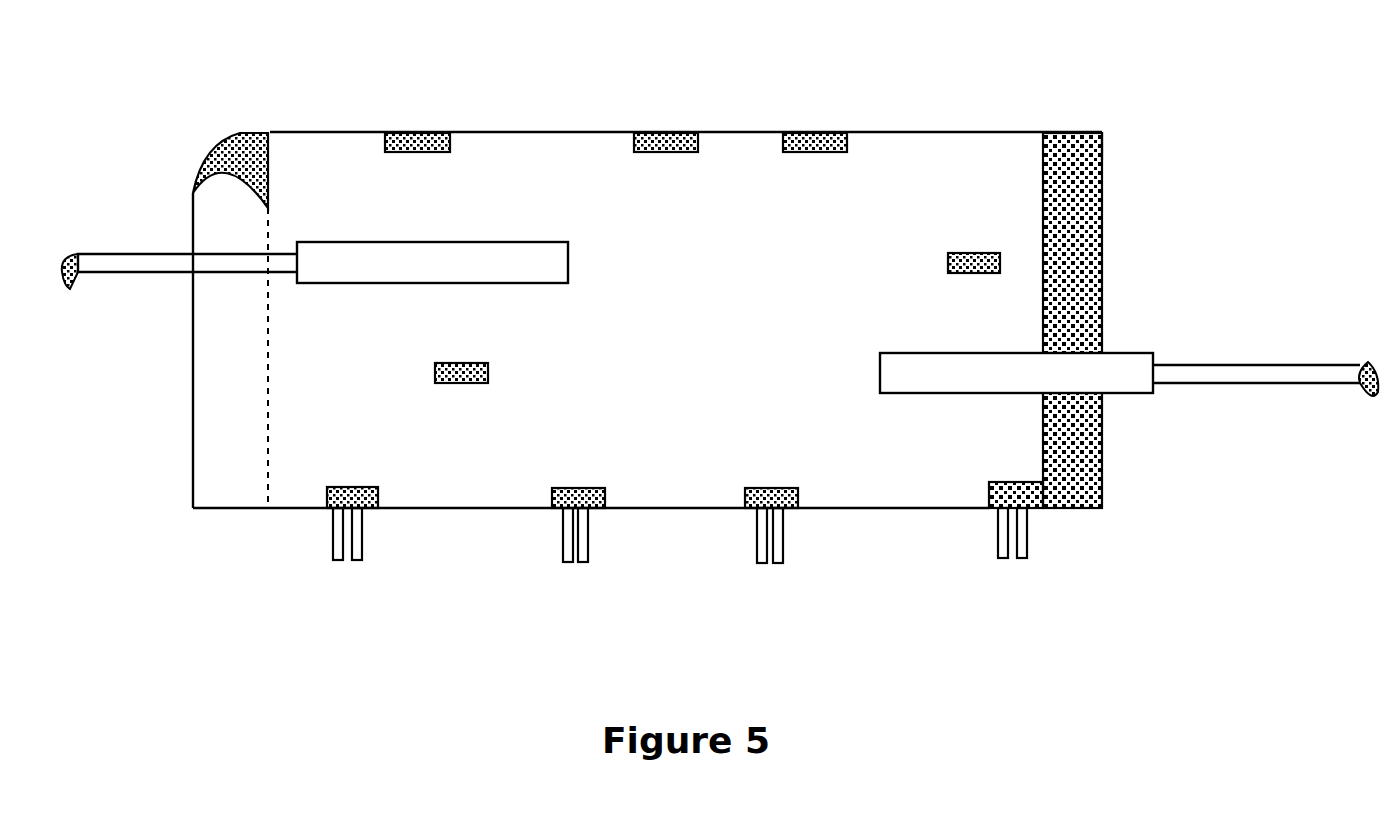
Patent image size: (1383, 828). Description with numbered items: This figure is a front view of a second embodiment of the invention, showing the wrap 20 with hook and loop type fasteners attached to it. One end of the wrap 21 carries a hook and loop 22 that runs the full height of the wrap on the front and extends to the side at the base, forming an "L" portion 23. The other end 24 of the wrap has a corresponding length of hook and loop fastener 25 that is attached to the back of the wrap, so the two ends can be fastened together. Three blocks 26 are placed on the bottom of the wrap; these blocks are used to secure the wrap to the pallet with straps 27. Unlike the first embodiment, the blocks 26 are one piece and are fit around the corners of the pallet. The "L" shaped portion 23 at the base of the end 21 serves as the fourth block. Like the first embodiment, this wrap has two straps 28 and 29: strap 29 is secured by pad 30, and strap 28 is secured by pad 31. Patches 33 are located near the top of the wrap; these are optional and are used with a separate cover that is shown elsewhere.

The wrap 20 is at (540, 128).
The end of the wrap 21 is at (1098, 203).
The hook and loop 22 is at (1077, 160).
The "L" portion 23 is at (988, 481).
The other end 24 is at (193, 397).
The hook and loop fastener 25 is at (222, 152).
The blocks 26 is at (354, 482).
The straps 27 is at (358, 558).
The strap 28 is at (948, 387).
The strap 29 is at (478, 247).
The pad 30 is at (970, 253).
The pad 31 is at (485, 362).
The patches 33 is at (427, 140).